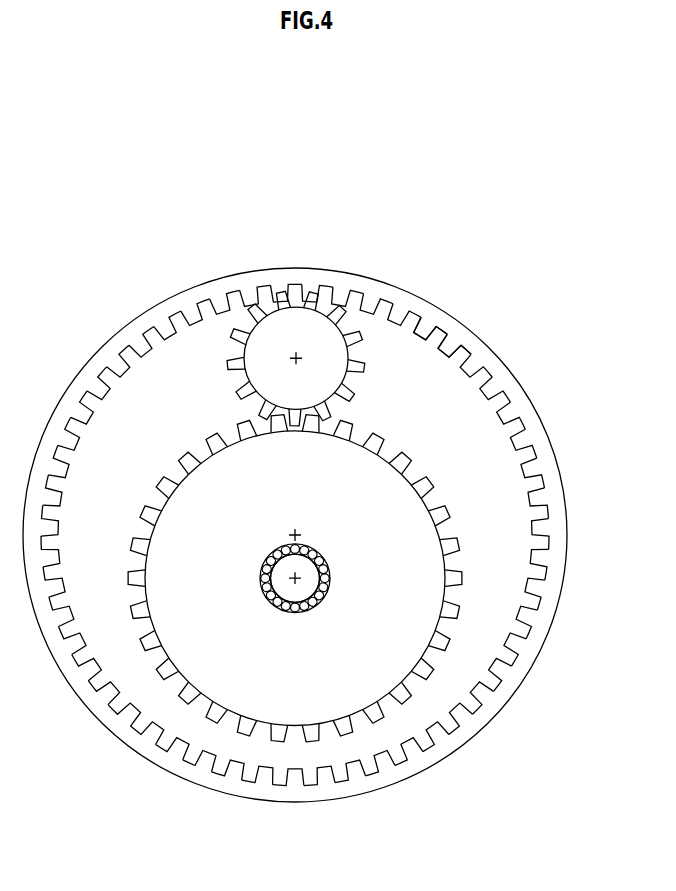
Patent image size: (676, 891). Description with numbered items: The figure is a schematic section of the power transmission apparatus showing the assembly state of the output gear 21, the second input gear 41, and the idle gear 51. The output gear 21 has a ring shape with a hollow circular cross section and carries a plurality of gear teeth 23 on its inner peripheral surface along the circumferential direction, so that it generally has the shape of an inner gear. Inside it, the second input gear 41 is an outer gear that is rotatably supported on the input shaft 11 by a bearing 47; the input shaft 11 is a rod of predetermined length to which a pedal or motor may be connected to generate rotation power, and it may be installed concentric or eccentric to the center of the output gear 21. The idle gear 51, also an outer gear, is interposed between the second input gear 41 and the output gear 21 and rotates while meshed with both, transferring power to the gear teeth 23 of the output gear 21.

The output gear 21 is at (134, 315).
The gear teeth 23 is at (435, 348).
The idle gear 51 is at (303, 328).
The second input gear 41 is at (408, 648).
The bearing 47 is at (267, 603).
The input shaft 11 is at (305, 593).